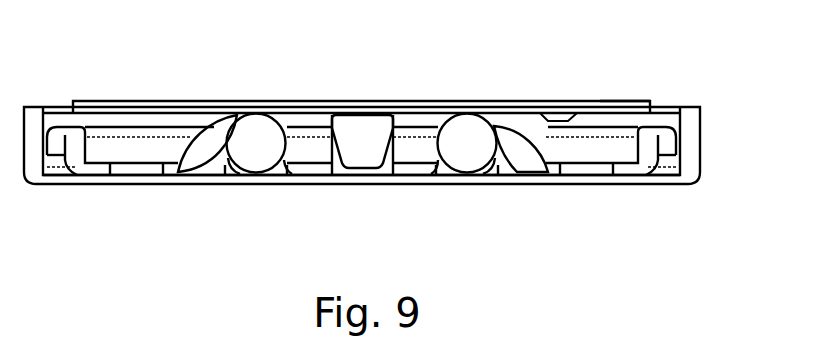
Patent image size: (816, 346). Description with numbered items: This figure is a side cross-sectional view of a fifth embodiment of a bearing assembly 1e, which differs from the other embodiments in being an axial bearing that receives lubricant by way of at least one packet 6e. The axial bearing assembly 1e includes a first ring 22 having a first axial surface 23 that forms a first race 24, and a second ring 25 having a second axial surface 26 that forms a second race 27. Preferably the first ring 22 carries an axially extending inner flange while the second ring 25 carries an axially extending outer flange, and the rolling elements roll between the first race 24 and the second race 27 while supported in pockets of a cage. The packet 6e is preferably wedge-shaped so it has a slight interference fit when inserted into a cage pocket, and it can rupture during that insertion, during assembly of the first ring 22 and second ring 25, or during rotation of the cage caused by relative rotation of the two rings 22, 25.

The bearing assembly 1e is at (620, 90).
The packet 6e is at (360, 135).
The first ring 22 is at (495, 103).
The first axial surface 23 is at (300, 108).
The first race 24 is at (137, 101).
The second ring 25 is at (683, 143).
The second axial surface 26 is at (320, 184).
The second race 27 is at (135, 184).